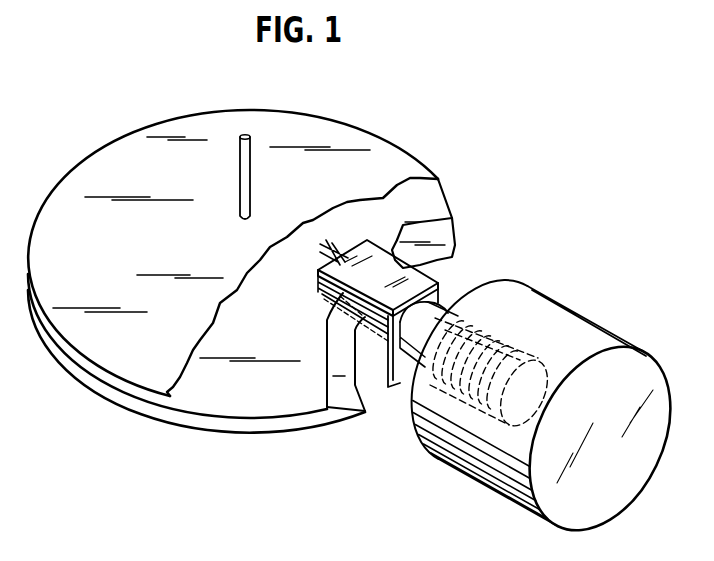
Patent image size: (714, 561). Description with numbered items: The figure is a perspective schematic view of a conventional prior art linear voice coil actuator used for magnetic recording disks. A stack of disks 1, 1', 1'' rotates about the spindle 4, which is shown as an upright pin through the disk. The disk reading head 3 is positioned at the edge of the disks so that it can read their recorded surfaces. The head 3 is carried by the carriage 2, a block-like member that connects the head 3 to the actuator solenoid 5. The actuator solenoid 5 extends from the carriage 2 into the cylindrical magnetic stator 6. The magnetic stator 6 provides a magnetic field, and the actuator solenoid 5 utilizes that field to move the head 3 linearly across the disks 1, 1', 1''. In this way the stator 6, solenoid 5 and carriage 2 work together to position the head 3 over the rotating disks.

The disk 1 is at (233, 258).
The disk 1' is at (446, 207).
The disk 1'' is at (450, 241).
The carriage 2 is at (430, 282).
The disk reading head 3 is at (336, 247).
The spindle 4 is at (250, 190).
The actuator solenoid 5 is at (460, 308).
The magnetic stator 6 is at (577, 322).